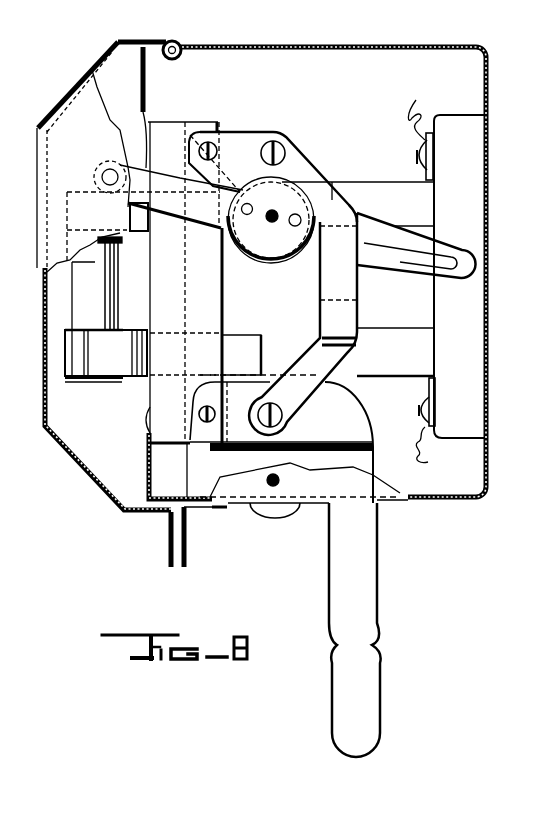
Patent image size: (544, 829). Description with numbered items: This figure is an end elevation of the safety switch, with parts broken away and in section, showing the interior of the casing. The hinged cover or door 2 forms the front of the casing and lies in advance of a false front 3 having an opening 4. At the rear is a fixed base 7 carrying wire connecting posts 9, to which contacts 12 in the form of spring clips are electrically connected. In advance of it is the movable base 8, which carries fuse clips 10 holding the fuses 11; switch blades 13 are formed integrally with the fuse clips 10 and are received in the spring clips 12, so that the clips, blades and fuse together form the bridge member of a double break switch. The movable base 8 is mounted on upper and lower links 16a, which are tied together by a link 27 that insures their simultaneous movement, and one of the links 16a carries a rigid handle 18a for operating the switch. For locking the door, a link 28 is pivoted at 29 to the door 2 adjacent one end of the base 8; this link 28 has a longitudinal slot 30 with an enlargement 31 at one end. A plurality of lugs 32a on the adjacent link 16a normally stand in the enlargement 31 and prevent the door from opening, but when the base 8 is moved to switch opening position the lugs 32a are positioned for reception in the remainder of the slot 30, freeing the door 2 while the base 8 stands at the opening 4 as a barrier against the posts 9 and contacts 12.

The cover or door 2 is at (55, 142).
The false front 3 is at (152, 88).
The opening 4 is at (147, 117).
The fixed base 7 is at (468, 196).
The movable base 8 is at (152, 400).
The wire connecting posts 9 is at (415, 143).
The fuse clips 10 is at (125, 220).
The fuses 11 is at (87, 300).
The contacts (spring clips) 12 is at (378, 186).
The contacts (switch blades) 13 is at (240, 263).
The links 16a is at (238, 140).
The handle 18a is at (359, 571).
The link 27 is at (343, 291).
The link 28 is at (165, 232).
The pivot 29 is at (110, 178).
The longitudinal slot 30 is at (460, 257).
The enlargement 31 is at (294, 226).
The lugs 32a is at (249, 208).